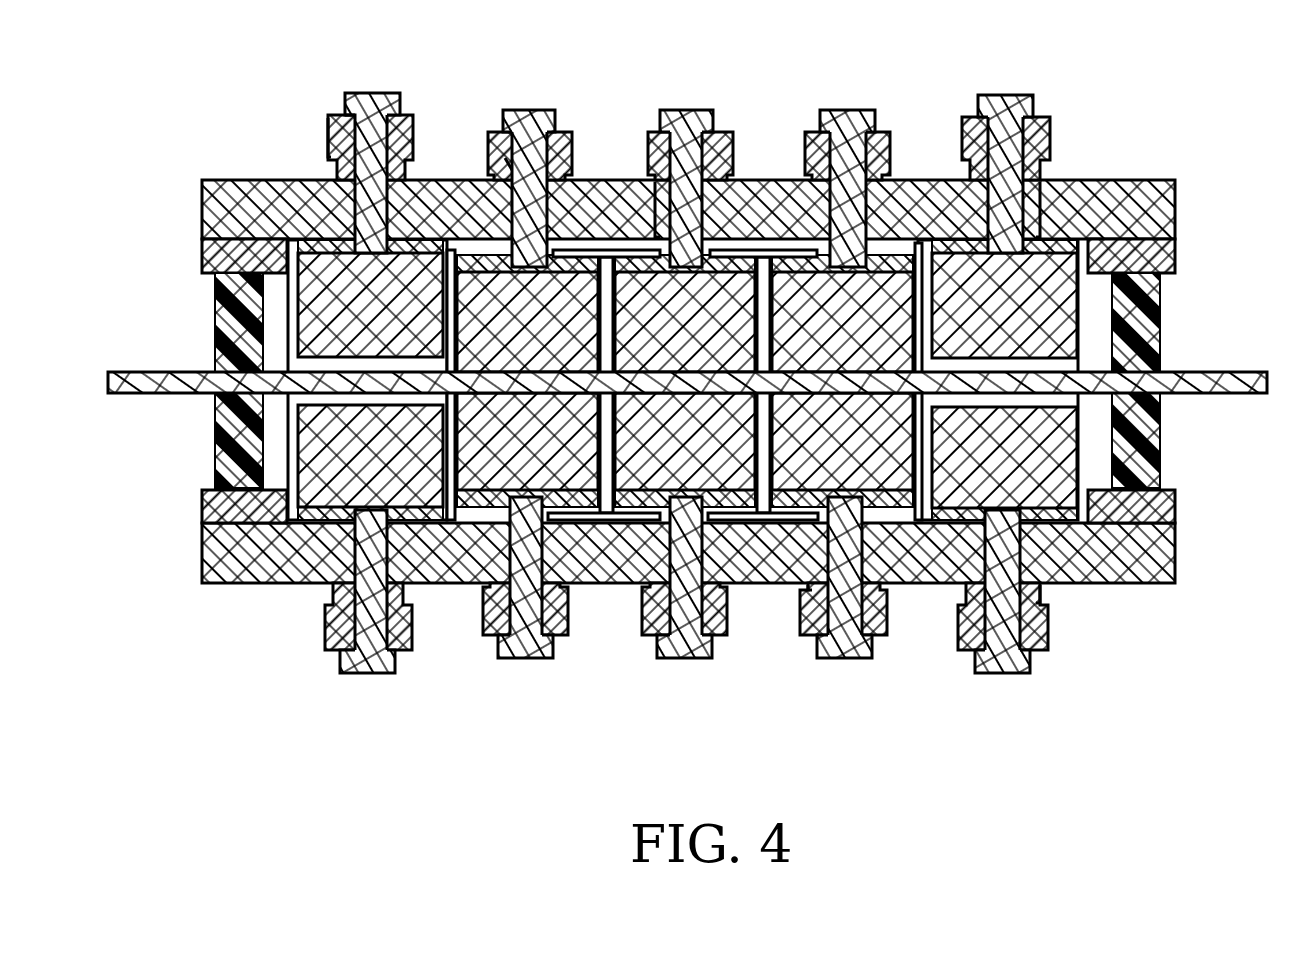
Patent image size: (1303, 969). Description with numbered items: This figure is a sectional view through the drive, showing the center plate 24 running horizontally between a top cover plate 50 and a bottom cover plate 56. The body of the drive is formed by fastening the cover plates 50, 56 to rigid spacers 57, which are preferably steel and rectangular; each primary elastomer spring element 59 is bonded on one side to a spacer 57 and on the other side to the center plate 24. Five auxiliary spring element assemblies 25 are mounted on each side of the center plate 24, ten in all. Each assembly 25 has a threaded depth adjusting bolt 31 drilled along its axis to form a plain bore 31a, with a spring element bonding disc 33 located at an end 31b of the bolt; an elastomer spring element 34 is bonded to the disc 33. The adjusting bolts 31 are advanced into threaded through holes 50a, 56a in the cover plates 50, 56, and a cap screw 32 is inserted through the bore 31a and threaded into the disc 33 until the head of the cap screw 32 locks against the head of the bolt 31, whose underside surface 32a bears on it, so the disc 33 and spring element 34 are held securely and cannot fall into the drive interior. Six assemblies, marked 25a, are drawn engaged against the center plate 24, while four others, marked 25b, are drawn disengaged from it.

The center plate 24 is at (1242, 375).
The auxiliary spring element assembly 25 is at (852, 103).
The engaged auxiliary spring element assembly 25a is at (641, 247).
The disengaged auxiliary spring element assembly 25b is at (293, 338).
The depth adjusting bolt 31 is at (337, 172).
The plain bore 31a is at (510, 160).
The end of adjusting bolt 31b is at (330, 135).
The cap screw 32 is at (376, 93).
The bolt head underside 32a is at (345, 102).
The spring element bonding disc 33 is at (745, 232).
The elastomer spring element 34 is at (684, 381).
The top cover plate 50 is at (1140, 181).
The threaded through hole 50a is at (815, 195).
The bottom cover plate 56 is at (1178, 565).
The threaded through hole 56a is at (820, 582).
The rigid spacer 57 is at (200, 263).
The primary elastomer spring element 59 is at (213, 304).